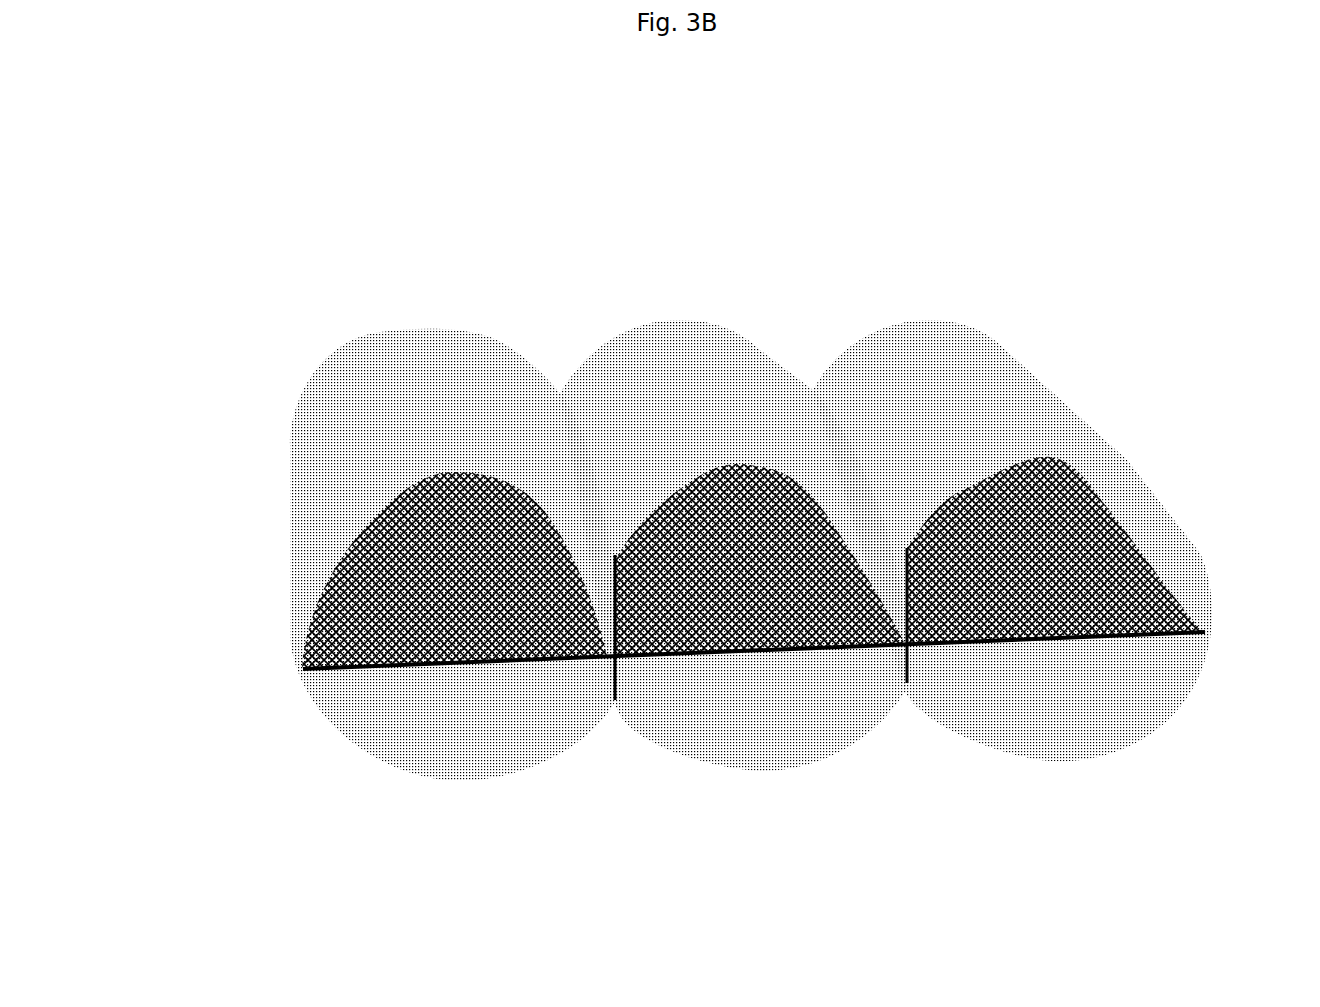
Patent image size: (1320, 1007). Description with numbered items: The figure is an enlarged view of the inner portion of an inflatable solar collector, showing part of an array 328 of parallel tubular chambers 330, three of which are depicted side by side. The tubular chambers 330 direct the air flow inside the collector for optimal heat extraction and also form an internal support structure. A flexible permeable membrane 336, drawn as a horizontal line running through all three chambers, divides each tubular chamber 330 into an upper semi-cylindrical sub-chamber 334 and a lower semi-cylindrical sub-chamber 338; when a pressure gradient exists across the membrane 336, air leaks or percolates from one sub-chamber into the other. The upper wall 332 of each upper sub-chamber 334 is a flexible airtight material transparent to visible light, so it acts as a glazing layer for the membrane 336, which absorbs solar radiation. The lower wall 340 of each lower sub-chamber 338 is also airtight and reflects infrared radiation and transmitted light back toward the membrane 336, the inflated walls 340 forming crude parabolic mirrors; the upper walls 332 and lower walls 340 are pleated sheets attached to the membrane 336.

The array of parallel tubular chambers 328 is at (246, 586).
The tubular chamber 330 is at (419, 240).
The upper wall 332 is at (497, 352).
The upper semi-cylindrical sub-chamber 334 is at (452, 518).
The flexible permeable membrane 336 is at (1210, 632).
The lower semi-cylindrical sub-chamber 338 is at (541, 716).
The lower wall 340 is at (393, 768).